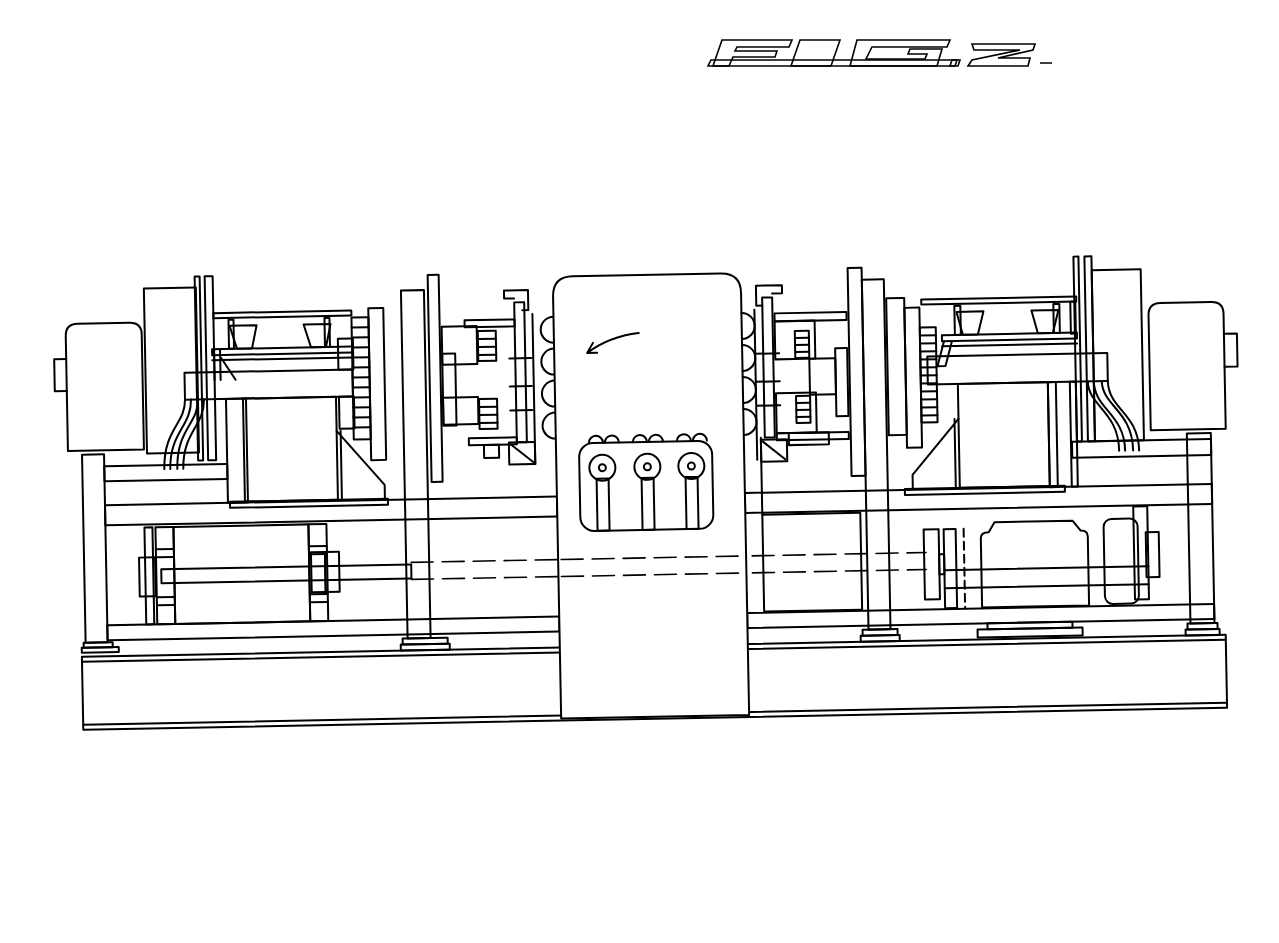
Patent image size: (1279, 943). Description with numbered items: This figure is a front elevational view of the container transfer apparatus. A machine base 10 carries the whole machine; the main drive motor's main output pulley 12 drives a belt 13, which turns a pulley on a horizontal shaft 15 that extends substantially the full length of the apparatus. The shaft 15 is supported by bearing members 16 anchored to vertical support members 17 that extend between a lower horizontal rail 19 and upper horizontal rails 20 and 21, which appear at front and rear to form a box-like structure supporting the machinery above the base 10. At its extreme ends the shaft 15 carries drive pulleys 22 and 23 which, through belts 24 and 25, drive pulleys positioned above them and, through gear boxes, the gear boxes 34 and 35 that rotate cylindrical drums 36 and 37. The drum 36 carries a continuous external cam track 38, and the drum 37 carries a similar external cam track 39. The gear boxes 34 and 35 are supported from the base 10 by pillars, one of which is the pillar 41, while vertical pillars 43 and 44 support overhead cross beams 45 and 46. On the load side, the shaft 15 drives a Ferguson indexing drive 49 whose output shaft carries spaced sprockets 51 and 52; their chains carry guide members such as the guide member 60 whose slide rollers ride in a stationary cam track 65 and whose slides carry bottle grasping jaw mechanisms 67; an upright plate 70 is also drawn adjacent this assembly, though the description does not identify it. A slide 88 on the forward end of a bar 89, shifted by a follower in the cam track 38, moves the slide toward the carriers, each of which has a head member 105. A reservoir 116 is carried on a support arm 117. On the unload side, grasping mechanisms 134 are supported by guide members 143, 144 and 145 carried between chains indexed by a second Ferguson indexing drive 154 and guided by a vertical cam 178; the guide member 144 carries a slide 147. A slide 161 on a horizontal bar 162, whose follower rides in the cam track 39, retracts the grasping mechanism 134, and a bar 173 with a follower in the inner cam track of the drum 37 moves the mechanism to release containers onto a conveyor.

The machine base 10 is at (992, 700).
The main output pulley 12 is at (930, 606).
The belt 13 is at (948, 614).
The horizontal shaft 15 is at (800, 566).
The bearing members 16 is at (165, 580).
The vertical support members 17 is at (165, 533).
The lower horizontal rail 19 is at (1040, 614).
The upper horizontal rail 20 is at (352, 508).
The upper horizontal rail 21 is at (782, 520).
The drive pulley 22 is at (138, 562).
The drive pulley 23 is at (1160, 580).
The belt 24 is at (144, 537).
The belt 25 is at (1150, 474).
The gear box 34 is at (85, 332).
The gear box 35 is at (1212, 320).
The cylindrical drum 36 is at (168, 290).
The cylindrical drum 37 is at (1116, 280).
The cam track 38 is at (210, 282).
The cam track 39 is at (1083, 285).
The pillar 41 is at (90, 482).
The vertical pillar 43 is at (1200, 552).
The vertical pillar 44 is at (858, 520).
The overhead cross beam 45 is at (415, 290).
The overhead cross beam 46 is at (878, 285).
The Ferguson indexing drive 49 is at (308, 452).
The sprocket 51 is at (365, 350).
The sprocket 52 is at (490, 330).
The guide member 60 is at (455, 325).
The stationary cam track 65 is at (380, 303).
The bottle grasping jaw mechanism 67 is at (540, 276).
The plate 70 is at (438, 272).
The slide 88 is at (350, 360).
The bar 89 is at (358, 386).
The head member 105 is at (690, 456).
The reservoir 116 is at (648, 482).
The support arm 117 is at (608, 530).
The grasping mechanism 134 is at (770, 271).
The guide member 143 is at (830, 396).
The guide member 144 is at (835, 320).
The guide member 145 is at (826, 428).
The slide 147 is at (806, 312).
The Ferguson indexing drive 154 is at (984, 438).
The slide 161 is at (962, 346).
The horizontal bar 162 is at (956, 386).
The bar 173 is at (1028, 274).
The vertical cam 178 is at (932, 318).